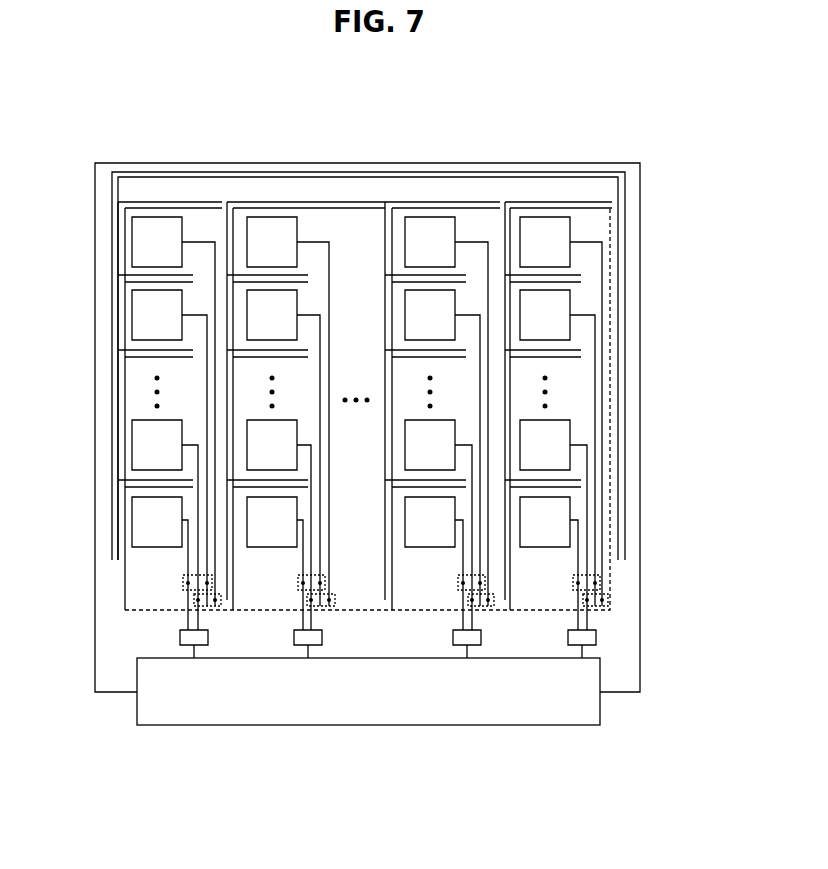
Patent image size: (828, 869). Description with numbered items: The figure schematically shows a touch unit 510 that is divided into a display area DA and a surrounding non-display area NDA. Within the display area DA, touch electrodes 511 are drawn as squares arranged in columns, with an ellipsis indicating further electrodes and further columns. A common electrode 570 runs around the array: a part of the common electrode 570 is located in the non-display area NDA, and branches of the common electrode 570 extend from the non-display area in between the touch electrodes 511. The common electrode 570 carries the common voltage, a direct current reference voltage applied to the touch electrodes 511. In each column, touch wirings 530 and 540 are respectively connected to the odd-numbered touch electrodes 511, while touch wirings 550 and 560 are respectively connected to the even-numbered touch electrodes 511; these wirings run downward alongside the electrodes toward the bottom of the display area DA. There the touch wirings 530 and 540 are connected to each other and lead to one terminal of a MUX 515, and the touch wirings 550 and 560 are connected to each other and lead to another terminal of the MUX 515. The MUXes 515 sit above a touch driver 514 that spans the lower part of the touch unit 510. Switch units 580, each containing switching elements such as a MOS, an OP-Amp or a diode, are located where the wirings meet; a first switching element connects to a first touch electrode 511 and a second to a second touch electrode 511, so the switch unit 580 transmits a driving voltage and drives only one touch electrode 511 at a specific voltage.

The touch unit 510 is at (461, 137).
The touch electrode 511 is at (132, 242).
The touch driver 514 is at (440, 710).
The MUX 515 is at (600, 640).
The touch wiring 530 is at (200, 575).
The touch wiring 540 is at (198, 556).
The touch wiring 550 is at (200, 582).
The touch wiring 560 is at (213, 562).
The common electrode 570 is at (325, 195).
The switch unit 580 is at (205, 612).
The display area DA is at (590, 229).
The non-display area NDA is at (630, 270).